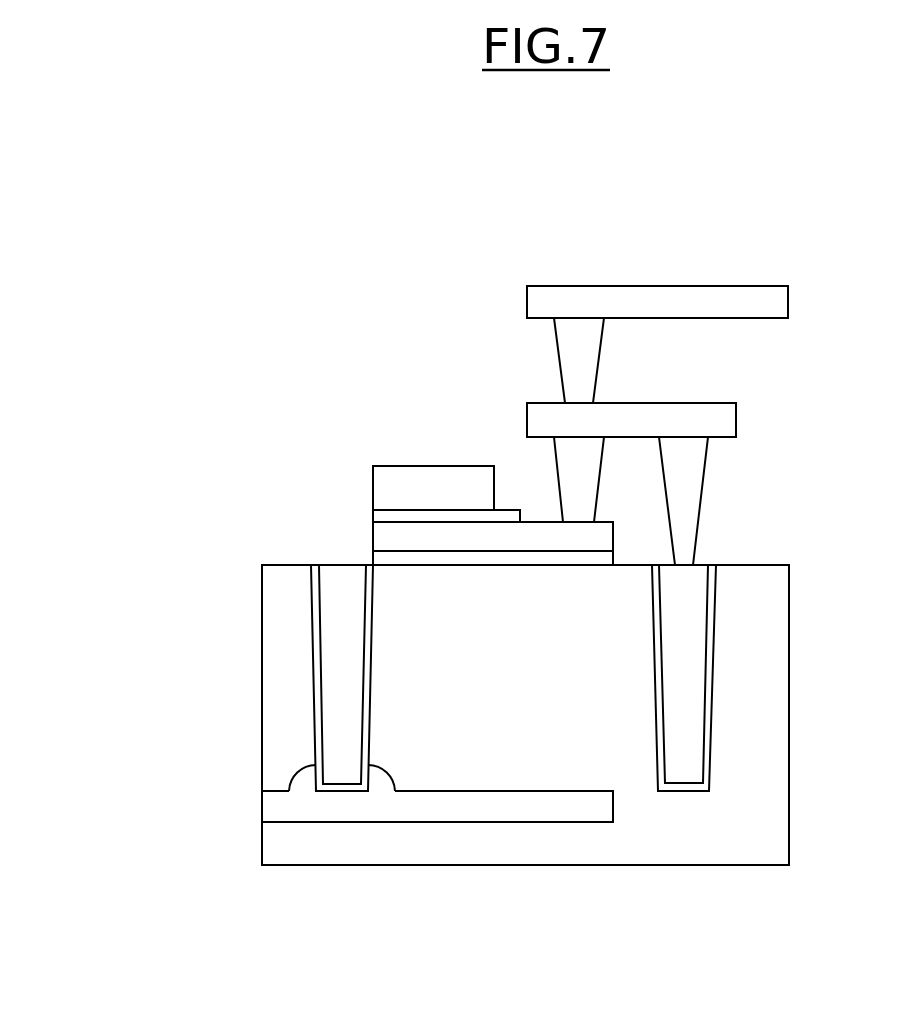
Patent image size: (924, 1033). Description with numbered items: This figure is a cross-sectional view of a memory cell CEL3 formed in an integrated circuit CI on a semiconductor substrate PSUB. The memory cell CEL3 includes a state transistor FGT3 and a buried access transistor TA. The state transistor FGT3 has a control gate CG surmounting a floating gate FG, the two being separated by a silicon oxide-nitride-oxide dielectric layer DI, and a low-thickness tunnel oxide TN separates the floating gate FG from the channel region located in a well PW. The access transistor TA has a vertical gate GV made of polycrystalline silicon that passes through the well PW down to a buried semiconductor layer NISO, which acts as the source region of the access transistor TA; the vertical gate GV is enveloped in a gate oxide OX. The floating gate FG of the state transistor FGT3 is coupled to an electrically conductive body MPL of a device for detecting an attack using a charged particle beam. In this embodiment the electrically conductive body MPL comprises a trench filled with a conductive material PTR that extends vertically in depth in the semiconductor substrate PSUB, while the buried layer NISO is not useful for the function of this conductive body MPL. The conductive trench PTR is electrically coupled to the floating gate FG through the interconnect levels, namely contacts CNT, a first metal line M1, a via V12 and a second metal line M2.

The integrated circuit CI is at (253, 383).
The semiconductor substrate PSUB is at (737, 856).
The well PW is at (437, 714).
The buried semiconductor layer NISO is at (278, 805).
The access transistor TA is at (287, 772).
The vertical gate GV is at (360, 675).
The gate oxide OX is at (320, 715).
The trench filled with a conductive material PTR is at (687, 680).
The memory cell CEL3 is at (371, 446).
The state transistor FGT3 is at (456, 449).
The tunnel oxide TN is at (378, 558).
The floating gate FG is at (493, 536).
The dielectric layer DI is at (375, 517).
The control gate CG is at (433, 488).
The electrically conductive body MPL is at (693, 275).
The contacts CNT is at (588, 483).
The metal line M1 is at (631, 420).
The via V12 is at (596, 350).
The metal line M2 is at (657, 302).